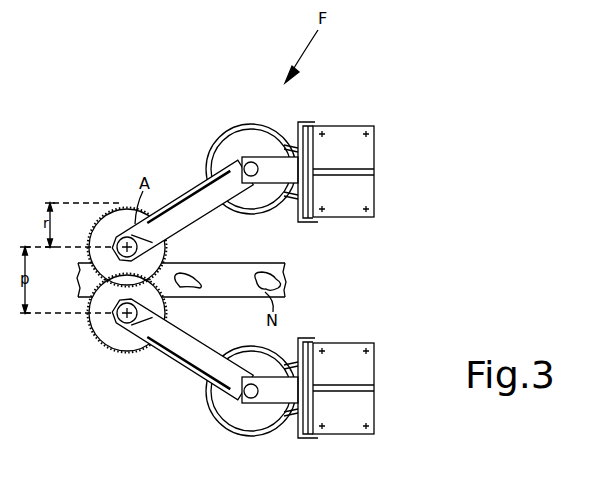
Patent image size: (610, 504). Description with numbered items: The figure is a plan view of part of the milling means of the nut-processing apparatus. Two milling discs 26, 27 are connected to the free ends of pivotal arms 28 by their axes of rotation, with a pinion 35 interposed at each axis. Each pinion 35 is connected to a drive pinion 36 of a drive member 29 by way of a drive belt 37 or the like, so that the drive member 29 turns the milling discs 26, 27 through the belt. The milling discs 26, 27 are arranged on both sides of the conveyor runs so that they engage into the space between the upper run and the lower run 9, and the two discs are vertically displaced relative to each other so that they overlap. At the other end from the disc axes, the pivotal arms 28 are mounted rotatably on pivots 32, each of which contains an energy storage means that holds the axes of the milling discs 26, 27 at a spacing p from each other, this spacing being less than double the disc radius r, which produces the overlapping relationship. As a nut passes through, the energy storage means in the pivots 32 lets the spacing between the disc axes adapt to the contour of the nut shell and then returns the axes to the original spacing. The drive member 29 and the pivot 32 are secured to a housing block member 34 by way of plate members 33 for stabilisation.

The lower run 9 is at (237, 277).
The milling disc 26 is at (100, 232).
The milling disc 27 is at (103, 327).
The pivotal arm 28 is at (205, 257).
The drive member 29 is at (250, 130).
The pivot 32 is at (254, 165).
The plate member 33 is at (297, 130).
The housing block member 34 is at (370, 142).
The pinion 35 is at (121, 230).
The drive pinion 36 is at (224, 134).
The drive belt 37 is at (203, 160).